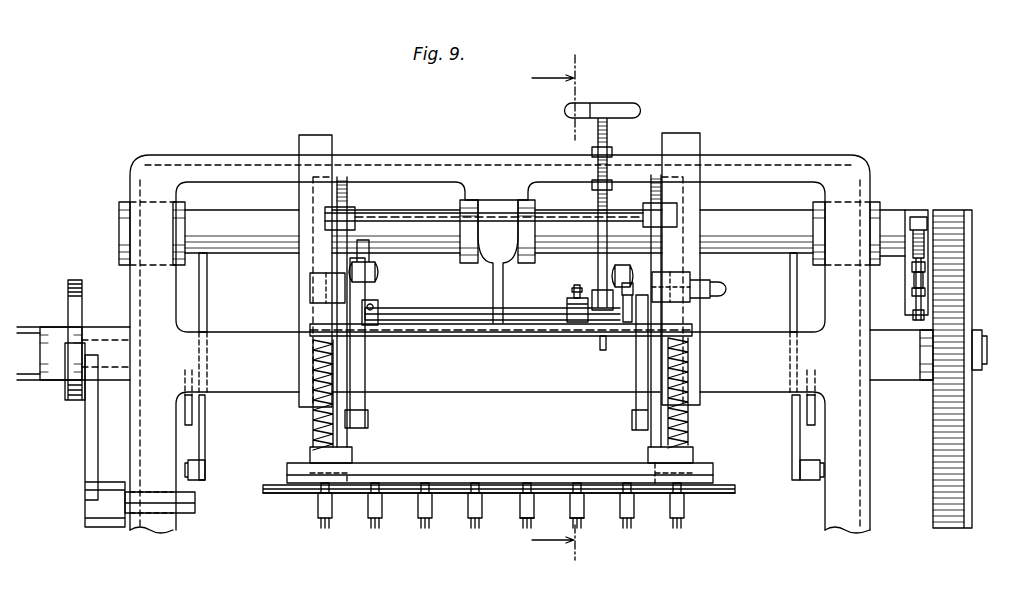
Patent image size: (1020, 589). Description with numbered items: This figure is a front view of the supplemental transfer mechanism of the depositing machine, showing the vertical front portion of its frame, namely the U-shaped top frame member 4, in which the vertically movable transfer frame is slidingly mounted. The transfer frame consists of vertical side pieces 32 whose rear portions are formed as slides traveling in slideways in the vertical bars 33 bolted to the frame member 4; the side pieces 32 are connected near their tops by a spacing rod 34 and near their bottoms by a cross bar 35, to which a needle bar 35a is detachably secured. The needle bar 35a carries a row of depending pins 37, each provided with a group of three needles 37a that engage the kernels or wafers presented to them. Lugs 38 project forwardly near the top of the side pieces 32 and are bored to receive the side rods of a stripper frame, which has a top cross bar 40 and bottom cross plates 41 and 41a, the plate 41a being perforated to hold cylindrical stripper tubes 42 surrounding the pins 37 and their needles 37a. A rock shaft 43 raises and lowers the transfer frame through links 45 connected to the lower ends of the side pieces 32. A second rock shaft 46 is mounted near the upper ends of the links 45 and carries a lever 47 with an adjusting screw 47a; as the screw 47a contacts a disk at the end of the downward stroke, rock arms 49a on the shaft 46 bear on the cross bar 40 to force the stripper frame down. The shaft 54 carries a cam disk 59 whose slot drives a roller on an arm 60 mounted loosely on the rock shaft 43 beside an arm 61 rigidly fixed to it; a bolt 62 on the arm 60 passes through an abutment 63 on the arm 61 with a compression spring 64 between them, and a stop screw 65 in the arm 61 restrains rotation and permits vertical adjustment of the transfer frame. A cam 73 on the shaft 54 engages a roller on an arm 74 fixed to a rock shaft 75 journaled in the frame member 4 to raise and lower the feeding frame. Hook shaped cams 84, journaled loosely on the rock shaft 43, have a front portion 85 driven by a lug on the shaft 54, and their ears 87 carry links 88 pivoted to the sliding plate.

The U-shaped top frame member 4 is at (853, 182).
The vertical side pieces 32 is at (352, 200).
The vertical bars 33 is at (333, 146).
The spacing rod 34 is at (540, 215).
The cross bar 35 is at (430, 463).
The needle bar 35a is at (474, 473).
The depending pins 37 is at (420, 495).
The needles 37a is at (525, 524).
The lugs 38 is at (310, 287).
The top cross bar 40 is at (485, 337).
The bottom cross plate 41 is at (734, 490).
The bottom cross plate 41a is at (732, 496).
The stripper tubes 42 is at (470, 512).
The rock shaft 43 is at (445, 240).
The links 45 is at (364, 378).
The rock shaft 46 is at (452, 308).
The arm or lever 47 is at (567, 300).
The adjusting screw 47a is at (580, 278).
The rock arms 49a is at (374, 326).
The shaft 54 is at (985, 345).
The cam disk 59 is at (960, 430).
The arm 60 is at (928, 318).
The arm 61 is at (905, 285).
The bolt 62 is at (920, 216).
The abutment 63 is at (925, 296).
The compression spring 64 is at (912, 256).
The stop screw 65 is at (912, 292).
The cam 73 is at (68, 300).
The arm 74 is at (85, 440).
The rock shaft 75 is at (188, 514).
The hook shaped cams 84 is at (208, 330).
The front portion 85 is at (186, 408).
The ears 87 is at (205, 446).
The links 88 is at (188, 468).